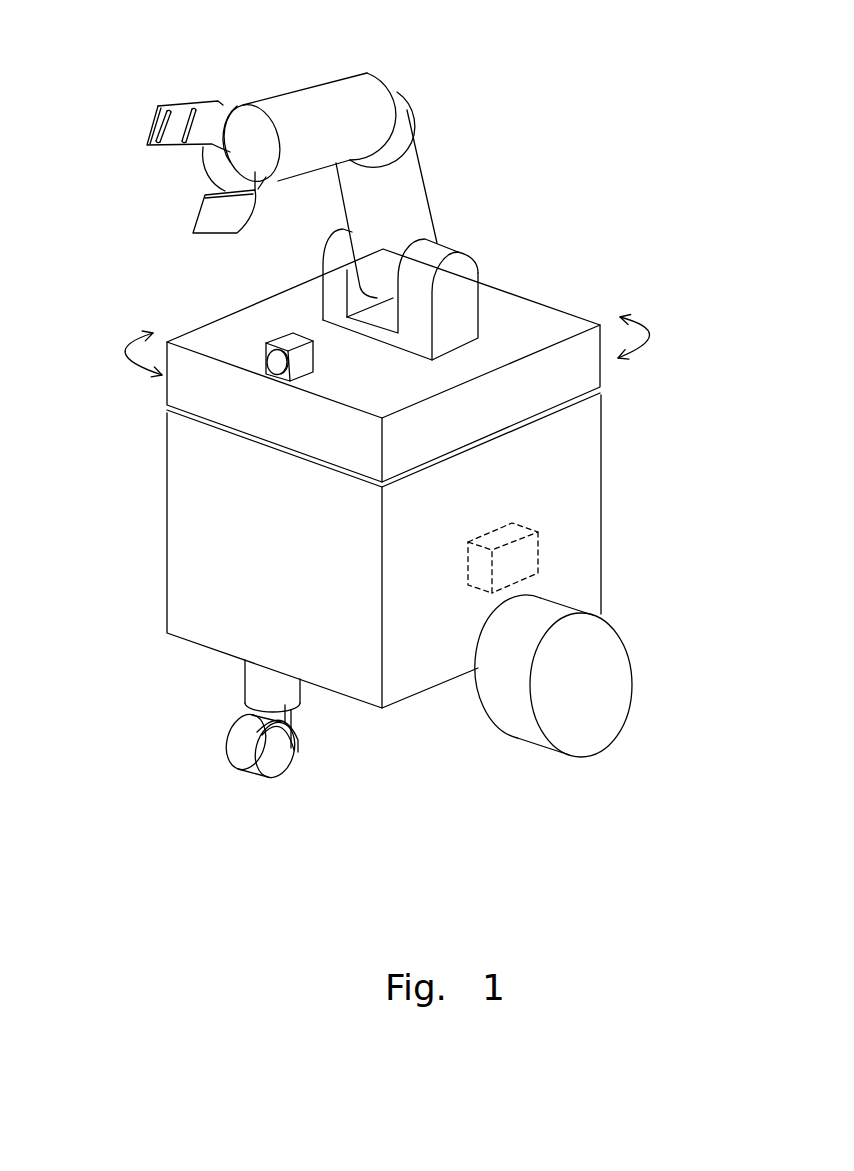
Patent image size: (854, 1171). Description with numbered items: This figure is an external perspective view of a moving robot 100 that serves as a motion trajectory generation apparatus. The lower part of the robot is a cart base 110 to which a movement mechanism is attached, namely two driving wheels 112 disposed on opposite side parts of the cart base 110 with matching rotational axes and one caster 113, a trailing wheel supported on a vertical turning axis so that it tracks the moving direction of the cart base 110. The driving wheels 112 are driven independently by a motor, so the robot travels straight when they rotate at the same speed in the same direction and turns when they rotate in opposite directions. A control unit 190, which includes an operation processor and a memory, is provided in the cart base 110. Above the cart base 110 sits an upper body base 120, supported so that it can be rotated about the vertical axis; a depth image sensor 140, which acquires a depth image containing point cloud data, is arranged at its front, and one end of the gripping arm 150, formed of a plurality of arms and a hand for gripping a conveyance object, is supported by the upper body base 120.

The moving robot 100 is at (135, 32).
The cart base 110 is at (592, 463).
The driving wheels 112 is at (592, 733).
The caster 113 is at (273, 763).
The upper body base 120 is at (523, 308).
The depth image sensor 140 is at (285, 337).
The gripping arm 150 is at (437, 88).
The control unit 190 is at (540, 547).